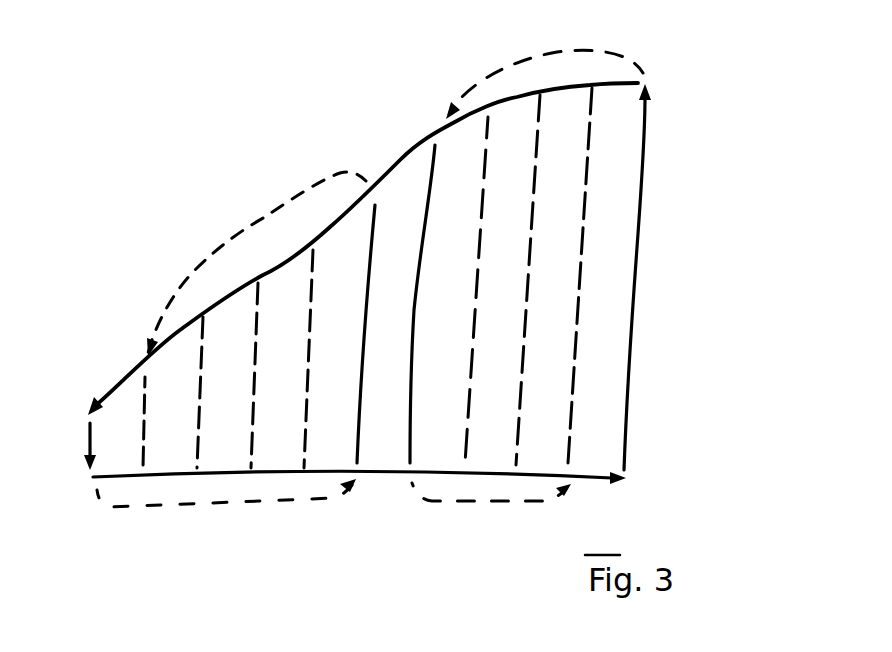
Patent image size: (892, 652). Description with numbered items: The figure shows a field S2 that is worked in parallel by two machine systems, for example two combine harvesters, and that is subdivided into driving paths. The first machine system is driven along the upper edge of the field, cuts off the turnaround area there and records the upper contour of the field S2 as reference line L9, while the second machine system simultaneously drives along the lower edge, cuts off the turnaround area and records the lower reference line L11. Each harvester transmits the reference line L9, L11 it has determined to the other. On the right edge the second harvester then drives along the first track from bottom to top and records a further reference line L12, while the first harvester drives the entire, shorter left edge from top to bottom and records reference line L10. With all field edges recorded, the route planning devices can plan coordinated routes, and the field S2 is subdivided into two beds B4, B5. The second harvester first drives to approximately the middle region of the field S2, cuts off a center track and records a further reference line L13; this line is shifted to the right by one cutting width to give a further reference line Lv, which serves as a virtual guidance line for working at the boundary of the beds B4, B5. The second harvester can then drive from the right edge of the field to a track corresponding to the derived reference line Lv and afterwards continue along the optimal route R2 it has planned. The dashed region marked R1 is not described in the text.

The reference line L9 is at (386, 168).
The field S2 is at (401, 152).
The bed B4 is at (168, 398).
The bed B5 is at (550, 245).
The reference line L13 is at (357, 443).
The reference line Lv is at (408, 433).
The reference line L12 is at (630, 308).
The reference line L10 is at (87, 450).
The reference line L11 is at (597, 482).
The first section R1 is at (217, 533).
The route R2 is at (590, 50).